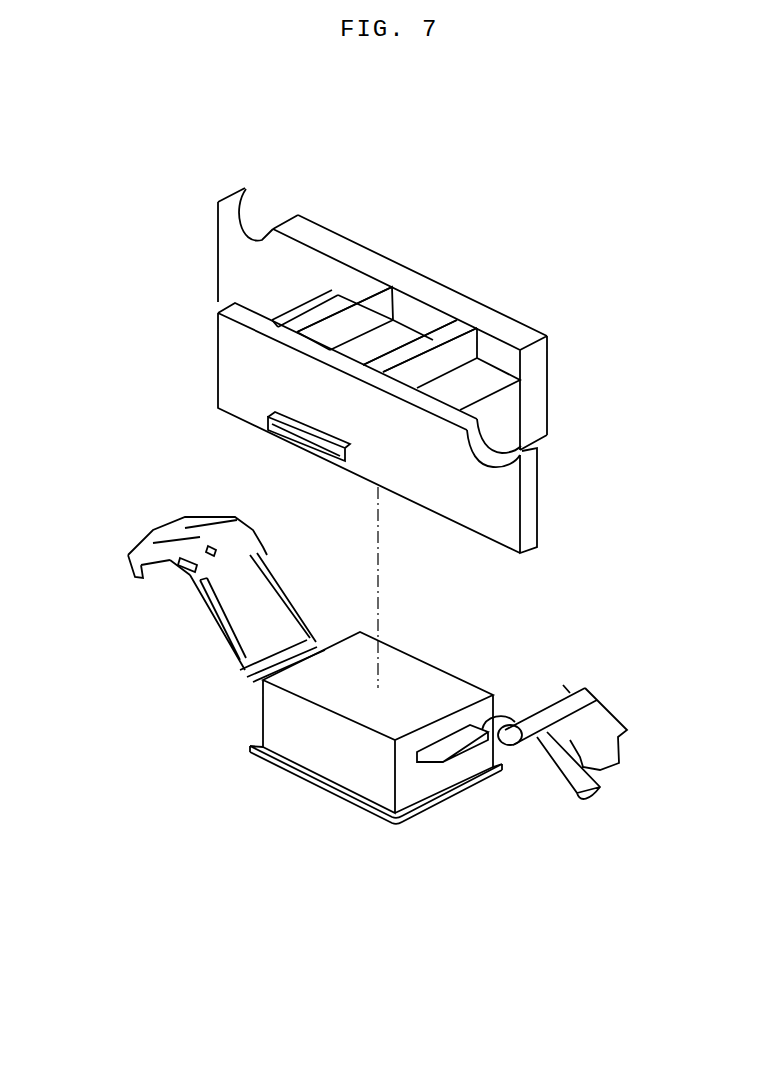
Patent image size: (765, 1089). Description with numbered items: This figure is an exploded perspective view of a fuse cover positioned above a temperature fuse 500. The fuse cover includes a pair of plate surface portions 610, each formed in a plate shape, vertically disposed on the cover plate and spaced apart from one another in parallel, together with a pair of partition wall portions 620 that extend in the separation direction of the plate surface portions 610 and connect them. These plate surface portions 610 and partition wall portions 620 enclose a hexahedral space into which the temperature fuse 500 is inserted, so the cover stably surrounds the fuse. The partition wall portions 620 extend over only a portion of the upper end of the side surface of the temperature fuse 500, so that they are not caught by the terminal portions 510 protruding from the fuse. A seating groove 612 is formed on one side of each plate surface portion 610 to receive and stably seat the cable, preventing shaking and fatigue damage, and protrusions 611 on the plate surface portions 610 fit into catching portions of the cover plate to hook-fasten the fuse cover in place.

The temperature fuse 500 is at (267, 805).
The terminal portion 510 is at (267, 628).
The plate surface portion 610 is at (527, 325).
The protrusion 611 is at (273, 428).
The seating groove 612 is at (275, 218).
The partition wall portion 620 is at (427, 350).